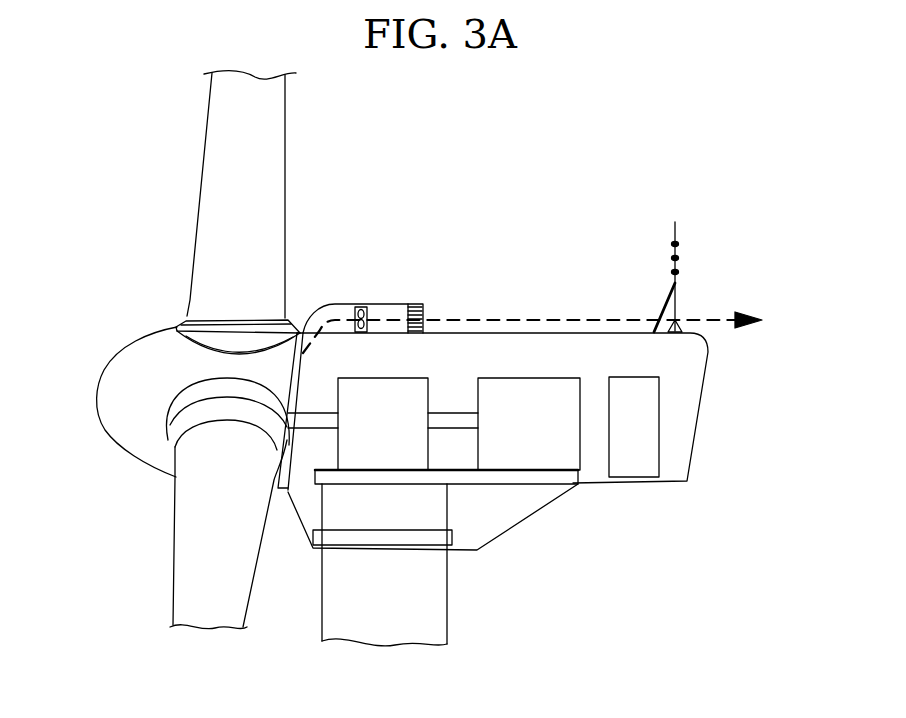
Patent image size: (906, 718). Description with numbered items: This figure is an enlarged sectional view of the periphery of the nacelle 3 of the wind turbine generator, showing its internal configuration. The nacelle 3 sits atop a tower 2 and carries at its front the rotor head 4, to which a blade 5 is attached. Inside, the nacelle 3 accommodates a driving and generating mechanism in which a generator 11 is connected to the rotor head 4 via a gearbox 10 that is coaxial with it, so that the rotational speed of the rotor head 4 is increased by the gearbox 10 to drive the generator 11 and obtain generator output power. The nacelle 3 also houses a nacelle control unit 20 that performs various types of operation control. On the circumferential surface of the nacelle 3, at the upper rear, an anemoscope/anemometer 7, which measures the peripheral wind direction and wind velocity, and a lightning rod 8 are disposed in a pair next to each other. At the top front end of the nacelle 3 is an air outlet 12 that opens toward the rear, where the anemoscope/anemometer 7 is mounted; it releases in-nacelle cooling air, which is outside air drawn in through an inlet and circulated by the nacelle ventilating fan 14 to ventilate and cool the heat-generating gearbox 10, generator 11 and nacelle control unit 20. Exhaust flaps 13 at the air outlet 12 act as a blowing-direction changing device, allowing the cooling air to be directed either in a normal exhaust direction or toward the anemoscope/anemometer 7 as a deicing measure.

The tower 2 is at (435, 605).
The nacelle 3 is at (578, 282).
The rotor head 4 is at (113, 372).
The wind turbine blade 5 is at (276, 165).
The anemoscope/anemometer 7 is at (680, 282).
The lightning rod 8 is at (678, 226).
The gearbox 10 is at (420, 398).
The generator 11 is at (563, 457).
The air outlet 12 is at (432, 330).
The exhaust flap 13 is at (428, 305).
The nacelle ventilating fan 14 is at (360, 309).
The nacelle control unit 20 is at (637, 467).